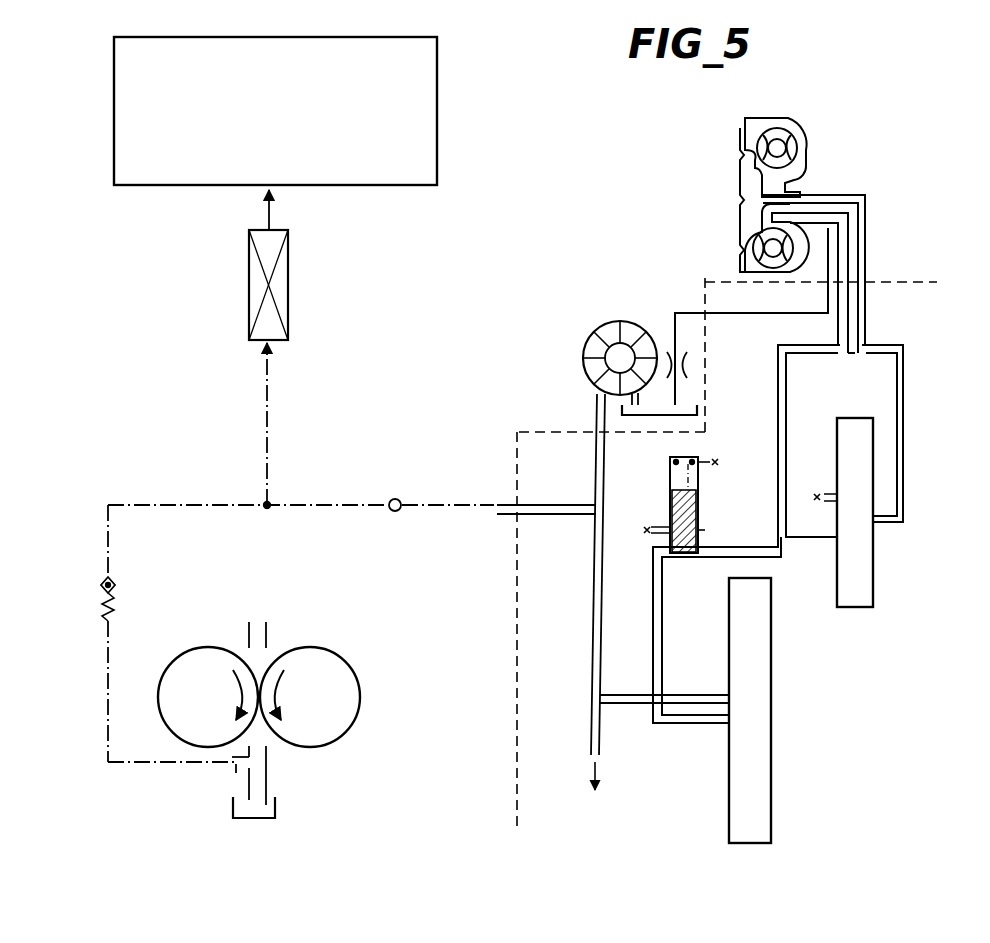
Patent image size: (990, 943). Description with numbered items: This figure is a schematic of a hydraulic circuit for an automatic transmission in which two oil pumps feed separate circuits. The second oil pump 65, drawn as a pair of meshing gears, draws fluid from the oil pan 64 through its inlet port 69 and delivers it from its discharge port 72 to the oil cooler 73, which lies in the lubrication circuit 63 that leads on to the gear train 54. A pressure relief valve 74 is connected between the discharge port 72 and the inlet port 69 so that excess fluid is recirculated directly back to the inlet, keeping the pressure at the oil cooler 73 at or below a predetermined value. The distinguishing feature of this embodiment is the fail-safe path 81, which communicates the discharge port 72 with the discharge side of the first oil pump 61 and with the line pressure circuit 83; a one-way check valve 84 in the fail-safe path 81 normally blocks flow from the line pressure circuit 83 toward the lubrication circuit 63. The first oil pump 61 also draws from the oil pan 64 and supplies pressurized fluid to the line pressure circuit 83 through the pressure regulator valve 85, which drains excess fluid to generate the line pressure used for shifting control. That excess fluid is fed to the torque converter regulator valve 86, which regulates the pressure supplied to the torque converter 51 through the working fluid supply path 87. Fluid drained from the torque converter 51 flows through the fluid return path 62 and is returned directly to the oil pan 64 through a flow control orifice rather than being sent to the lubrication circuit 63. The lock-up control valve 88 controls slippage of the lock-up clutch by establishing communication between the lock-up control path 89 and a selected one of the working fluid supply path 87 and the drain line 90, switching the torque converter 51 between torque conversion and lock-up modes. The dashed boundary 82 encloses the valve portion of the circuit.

The gear train 54 is at (275, 111).
The lubrication circuit 63 is at (272, 206).
The oil cooler 73 is at (290, 280).
The one-way check valve 84 is at (393, 497).
The fail-safe path 81 is at (511, 528).
The pressure relief valve 74 is at (116, 588).
The discharge port 72 is at (262, 637).
The second oil pump 65 is at (357, 672).
The inlet port 69 is at (268, 750).
The oil pan 64 is at (276, 809).
The first oil pump 61 is at (598, 335).
The line pressure circuit 83 is at (592, 636).
The valve body boundary 82 is at (910, 282).
The torque converter regulator valve 86 is at (688, 555).
The working fluid supply path 87 is at (787, 392).
The lock-up control path 89 is at (904, 398).
The fluid return path 62 is at (828, 284).
The lock-up control valve 88 is at (874, 565).
The drain line 90 is at (826, 490).
The pressure regulator valve 85 is at (772, 688).
The torque converter 51 is at (812, 136).